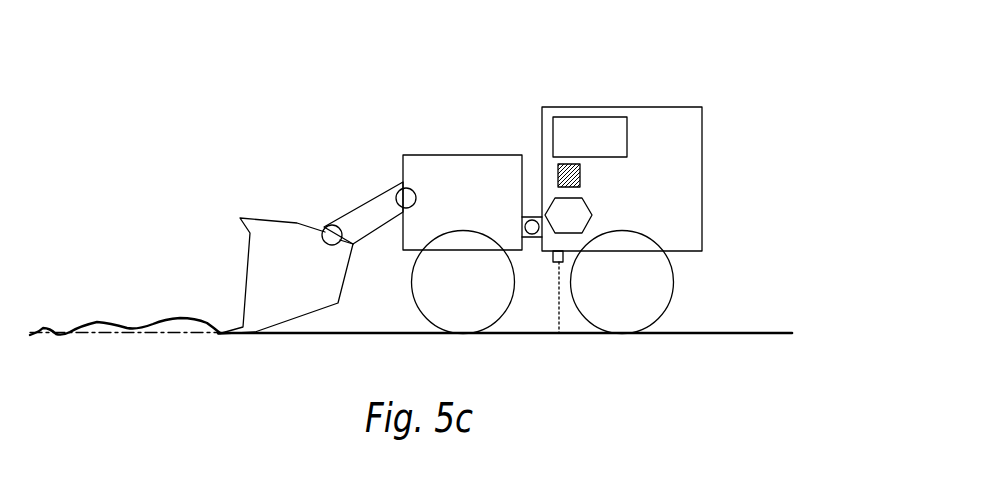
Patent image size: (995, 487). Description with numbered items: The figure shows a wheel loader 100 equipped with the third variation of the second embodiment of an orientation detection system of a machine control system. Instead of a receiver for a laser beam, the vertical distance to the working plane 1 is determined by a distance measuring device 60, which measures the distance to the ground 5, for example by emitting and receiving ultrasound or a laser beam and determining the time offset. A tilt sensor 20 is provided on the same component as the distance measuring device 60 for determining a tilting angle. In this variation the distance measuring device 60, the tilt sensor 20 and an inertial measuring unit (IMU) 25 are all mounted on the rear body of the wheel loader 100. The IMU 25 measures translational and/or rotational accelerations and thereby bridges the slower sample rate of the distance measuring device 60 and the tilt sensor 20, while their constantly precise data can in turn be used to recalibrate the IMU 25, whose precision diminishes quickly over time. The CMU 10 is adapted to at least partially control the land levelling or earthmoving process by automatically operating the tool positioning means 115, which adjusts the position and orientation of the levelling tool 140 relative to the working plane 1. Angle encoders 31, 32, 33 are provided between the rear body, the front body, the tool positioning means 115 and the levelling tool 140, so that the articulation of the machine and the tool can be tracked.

The wheel loader 100 is at (560, 77).
The CMU 10 is at (617, 128).
The tilt sensor 20 is at (557, 165).
The inertial measuring unit (IMU) 25 is at (592, 213).
The angle encoder 33 is at (528, 236).
The distance measuring device 60 is at (556, 263).
The tool positioning means 115 is at (368, 208).
The angle encoder 32 is at (402, 182).
The angle encoder 31 is at (323, 230).
The levelling tool 140 is at (267, 290).
The ground 5 is at (342, 334).
The working plane 1 is at (190, 334).